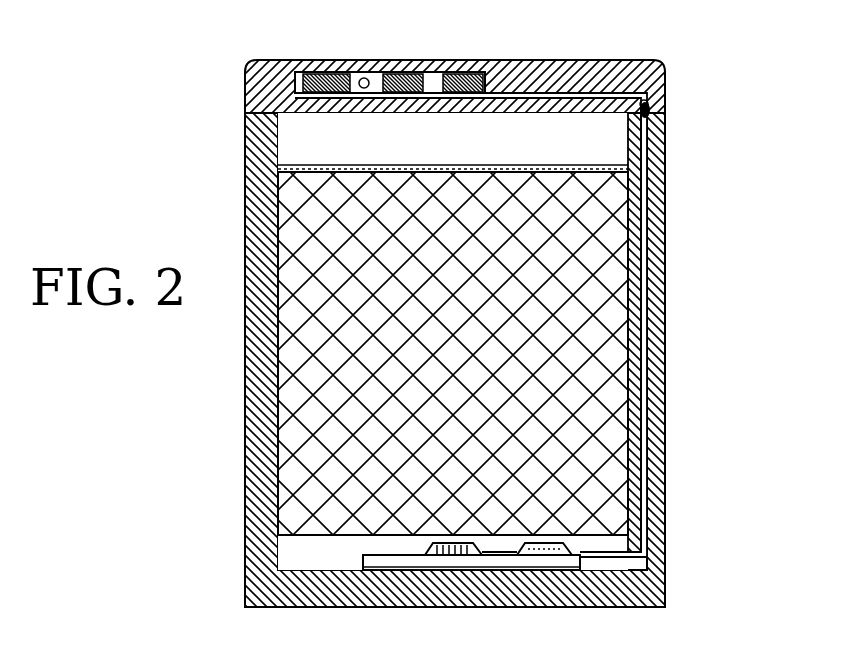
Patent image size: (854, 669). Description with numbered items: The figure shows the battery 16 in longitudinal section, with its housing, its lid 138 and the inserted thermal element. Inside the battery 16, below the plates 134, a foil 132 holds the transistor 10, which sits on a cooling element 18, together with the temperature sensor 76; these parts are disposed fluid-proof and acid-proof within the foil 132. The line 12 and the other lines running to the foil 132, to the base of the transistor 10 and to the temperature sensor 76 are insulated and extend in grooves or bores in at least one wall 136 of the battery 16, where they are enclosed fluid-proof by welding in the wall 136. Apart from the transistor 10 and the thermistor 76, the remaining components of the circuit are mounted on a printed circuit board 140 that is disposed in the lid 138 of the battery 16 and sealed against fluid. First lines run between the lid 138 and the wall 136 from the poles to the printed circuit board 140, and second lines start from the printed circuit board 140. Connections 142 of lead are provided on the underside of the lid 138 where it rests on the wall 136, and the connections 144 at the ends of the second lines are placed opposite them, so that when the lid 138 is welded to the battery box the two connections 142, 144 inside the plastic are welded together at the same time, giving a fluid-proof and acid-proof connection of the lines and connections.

The battery 16 is at (682, 346).
The wall 136 is at (666, 291).
The lid 138 is at (551, 61).
The printed circuit board 140 is at (304, 73).
The connections 142 is at (652, 104).
The connections 144 is at (656, 118).
The line 12 is at (628, 134).
The plates 134 is at (473, 348).
The foil 132 is at (372, 553).
The cooling element 18 is at (395, 561).
The transistor 10 is at (455, 559).
The temperature sensor 76 is at (530, 546).